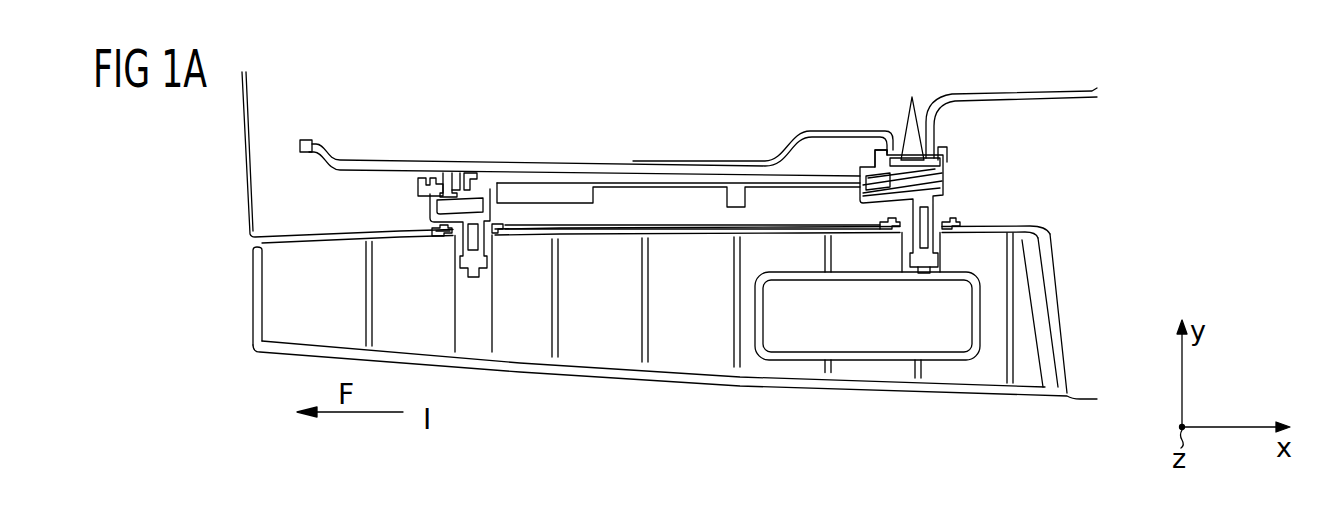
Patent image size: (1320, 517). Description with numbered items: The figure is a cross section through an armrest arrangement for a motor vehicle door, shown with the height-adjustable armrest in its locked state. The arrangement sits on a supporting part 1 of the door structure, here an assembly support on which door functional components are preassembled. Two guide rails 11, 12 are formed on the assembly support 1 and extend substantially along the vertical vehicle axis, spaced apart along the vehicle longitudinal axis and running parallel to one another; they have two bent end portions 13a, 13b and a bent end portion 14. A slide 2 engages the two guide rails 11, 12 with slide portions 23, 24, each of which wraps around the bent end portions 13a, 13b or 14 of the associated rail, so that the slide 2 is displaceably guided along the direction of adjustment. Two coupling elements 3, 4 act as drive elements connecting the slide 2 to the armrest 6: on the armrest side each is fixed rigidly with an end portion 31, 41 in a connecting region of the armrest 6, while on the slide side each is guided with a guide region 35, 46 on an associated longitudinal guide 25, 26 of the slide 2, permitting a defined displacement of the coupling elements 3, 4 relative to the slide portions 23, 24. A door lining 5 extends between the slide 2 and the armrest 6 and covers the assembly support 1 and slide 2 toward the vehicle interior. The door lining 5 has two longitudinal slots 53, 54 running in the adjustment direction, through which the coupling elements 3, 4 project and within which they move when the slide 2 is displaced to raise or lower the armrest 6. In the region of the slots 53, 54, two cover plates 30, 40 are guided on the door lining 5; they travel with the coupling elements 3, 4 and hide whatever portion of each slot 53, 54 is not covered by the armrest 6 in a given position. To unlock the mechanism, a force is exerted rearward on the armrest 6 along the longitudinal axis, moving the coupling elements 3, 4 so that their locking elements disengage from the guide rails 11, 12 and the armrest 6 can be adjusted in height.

The supporting part 1 is at (660, 166).
The slide 2 is at (550, 188).
The coupling element 3 is at (933, 217).
The coupling element 4 is at (507, 223).
The door lining 5 is at (297, 244).
The armrest 6 is at (603, 380).
The guide rail 11 is at (918, 140).
The guide rail 12 is at (460, 183).
The bent end portion 13a is at (883, 150).
The bent end portion 13b is at (948, 158).
The bent end portion 14 is at (448, 187).
The slide portion 23 is at (863, 170).
The slide portion 24 is at (420, 186).
The longitudinal guide 25 is at (875, 197).
The longitudinal guide 26 is at (430, 203).
The cover plate 30 is at (888, 228).
The end portion 31 is at (927, 268).
The guide region 35 is at (950, 197).
The cover plate 40 is at (437, 238).
The end portion 41 is at (473, 280).
The guide region 46 is at (477, 187).
The longitudinal slot 53 is at (900, 230).
The longitudinal slot 54 is at (447, 237).